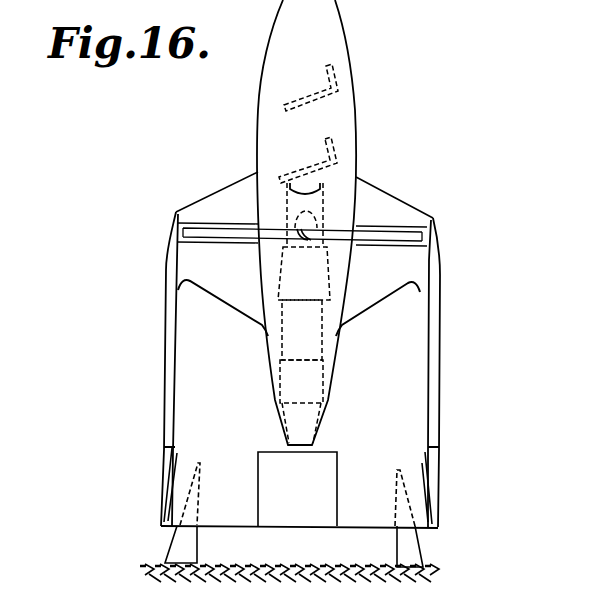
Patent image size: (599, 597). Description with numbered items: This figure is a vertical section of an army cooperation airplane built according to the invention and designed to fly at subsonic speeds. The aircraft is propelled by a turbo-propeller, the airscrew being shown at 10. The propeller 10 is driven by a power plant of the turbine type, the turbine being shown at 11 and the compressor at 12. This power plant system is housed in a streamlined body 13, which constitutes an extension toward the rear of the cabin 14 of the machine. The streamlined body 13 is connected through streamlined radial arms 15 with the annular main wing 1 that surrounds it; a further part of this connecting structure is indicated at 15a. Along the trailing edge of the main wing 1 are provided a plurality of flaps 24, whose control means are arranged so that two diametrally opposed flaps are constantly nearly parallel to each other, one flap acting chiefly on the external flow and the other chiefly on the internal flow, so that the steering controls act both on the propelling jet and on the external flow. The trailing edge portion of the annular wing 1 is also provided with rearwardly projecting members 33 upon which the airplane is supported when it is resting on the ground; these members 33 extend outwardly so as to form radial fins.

The main wing 1 is at (168, 370).
The propeller 10 is at (402, 238).
The turbine 11 is at (298, 386).
The compressor 12 is at (295, 285).
The streamlined body 13 is at (333, 278).
The cabin 14 is at (340, 125).
The streamlined radial arms 15 is at (388, 210).
The guide vane 15a is at (353, 293).
The flaps 24 is at (317, 480).
The rearwardly projecting members 33 is at (182, 547).